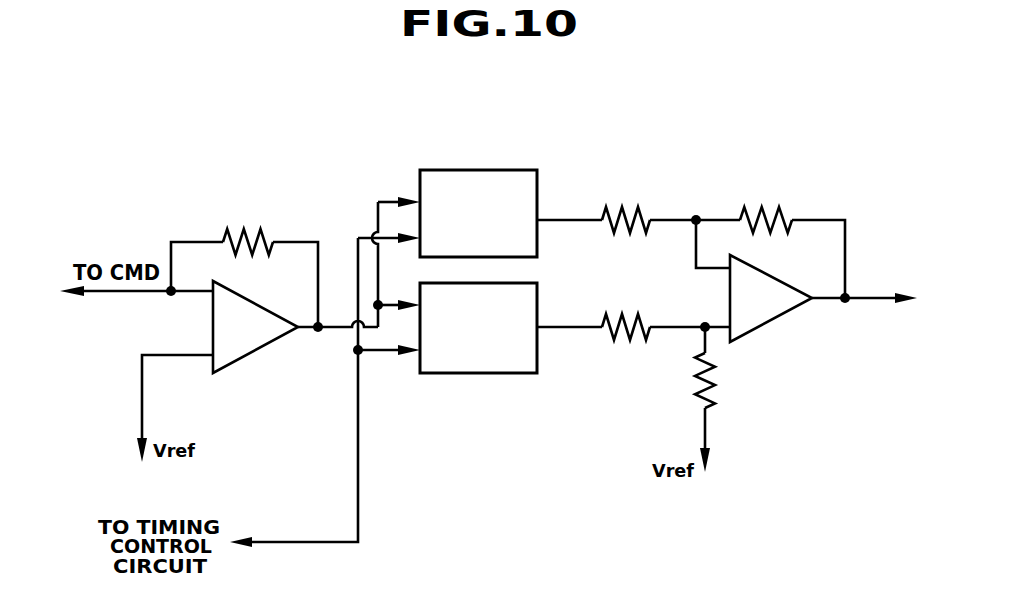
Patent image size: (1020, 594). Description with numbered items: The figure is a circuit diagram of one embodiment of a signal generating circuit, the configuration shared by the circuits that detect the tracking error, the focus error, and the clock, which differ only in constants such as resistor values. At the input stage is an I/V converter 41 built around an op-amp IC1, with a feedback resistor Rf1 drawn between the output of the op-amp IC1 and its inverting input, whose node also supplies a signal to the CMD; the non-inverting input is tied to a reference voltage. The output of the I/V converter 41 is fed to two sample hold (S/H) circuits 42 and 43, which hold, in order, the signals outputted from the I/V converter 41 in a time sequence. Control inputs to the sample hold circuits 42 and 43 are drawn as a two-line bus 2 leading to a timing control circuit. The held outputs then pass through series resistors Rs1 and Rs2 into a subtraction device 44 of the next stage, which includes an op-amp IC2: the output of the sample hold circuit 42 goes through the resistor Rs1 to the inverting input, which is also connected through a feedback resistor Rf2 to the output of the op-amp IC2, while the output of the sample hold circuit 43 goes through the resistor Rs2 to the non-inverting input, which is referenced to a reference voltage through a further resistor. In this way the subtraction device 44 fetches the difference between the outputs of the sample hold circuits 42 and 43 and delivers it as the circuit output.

The I/V converter 41 is at (265, 352).
The sample hold circuit 42 is at (510, 170).
The sample hold circuit 43 is at (537, 295).
The subtraction device 44 is at (664, 338).
The timing control signal lines 2 is at (315, 533).
The op-amp IC1 is at (272, 337).
The op-amp IC2 is at (786, 318).
The feedback resistor Rf1 is at (248, 230).
The feedback resistor Rf2 is at (766, 206).
The series resistor Rs1 is at (626, 205).
The series resistor Rs2 is at (626, 312).